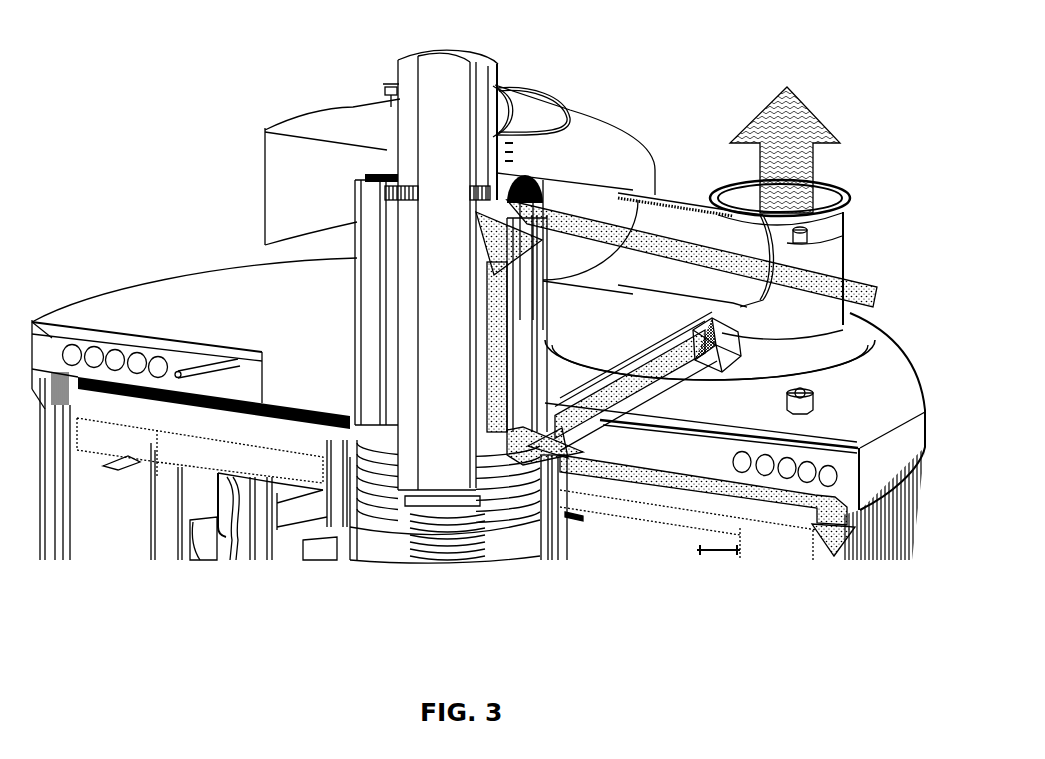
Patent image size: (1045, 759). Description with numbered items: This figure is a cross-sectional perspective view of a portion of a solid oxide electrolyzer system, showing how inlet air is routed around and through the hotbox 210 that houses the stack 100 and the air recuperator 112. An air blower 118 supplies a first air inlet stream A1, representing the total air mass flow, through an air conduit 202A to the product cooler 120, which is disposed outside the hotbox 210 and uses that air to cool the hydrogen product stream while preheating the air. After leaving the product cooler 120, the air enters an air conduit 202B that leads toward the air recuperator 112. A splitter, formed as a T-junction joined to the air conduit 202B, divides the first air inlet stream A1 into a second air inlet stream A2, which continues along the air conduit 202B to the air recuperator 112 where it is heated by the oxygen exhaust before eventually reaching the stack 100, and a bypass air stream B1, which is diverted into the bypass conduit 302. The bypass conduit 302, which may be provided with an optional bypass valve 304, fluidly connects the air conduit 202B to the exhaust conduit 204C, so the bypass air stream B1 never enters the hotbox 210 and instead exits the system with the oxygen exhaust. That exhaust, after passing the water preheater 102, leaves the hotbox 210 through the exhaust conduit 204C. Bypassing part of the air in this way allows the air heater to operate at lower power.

The hotbox 210 is at (133, 252).
The water preheater 102 is at (100, 368).
The product cooler 120 is at (352, 298).
The air conduit 202A is at (648, 200).
The air conduit 202B is at (550, 545).
The exhaust conduit 204C is at (848, 192).
The stack 100 is at (232, 560).
The bypass conduit 302 is at (667, 347).
The bypass valve 304 is at (716, 328).
The air recuperator 112 is at (868, 557).
The air blower 118 is at (712, 332).
The first air inlet stream A1 is at (678, 230).
The second air inlet stream A2 is at (688, 488).
The bypass air stream B1 is at (574, 473).